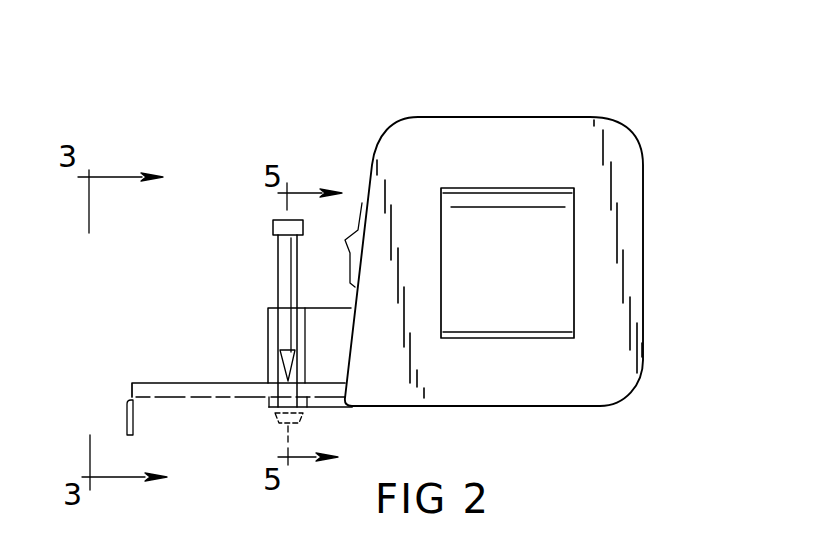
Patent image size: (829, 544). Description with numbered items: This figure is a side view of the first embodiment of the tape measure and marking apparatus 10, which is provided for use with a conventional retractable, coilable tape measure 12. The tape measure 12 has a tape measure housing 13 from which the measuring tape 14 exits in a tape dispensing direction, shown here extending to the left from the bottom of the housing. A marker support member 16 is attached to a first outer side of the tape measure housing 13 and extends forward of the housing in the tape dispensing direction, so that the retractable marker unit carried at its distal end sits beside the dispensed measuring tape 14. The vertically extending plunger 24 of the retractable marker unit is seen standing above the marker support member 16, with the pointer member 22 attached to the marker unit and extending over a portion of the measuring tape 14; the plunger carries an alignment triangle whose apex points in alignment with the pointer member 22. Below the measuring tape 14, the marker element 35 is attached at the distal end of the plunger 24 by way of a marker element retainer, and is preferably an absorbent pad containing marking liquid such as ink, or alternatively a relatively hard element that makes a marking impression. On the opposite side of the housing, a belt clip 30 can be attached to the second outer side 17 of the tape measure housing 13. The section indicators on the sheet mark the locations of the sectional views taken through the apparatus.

The tape measure and marking apparatus 10 is at (206, 277).
The tape measure 12 is at (648, 143).
The tape measure housing 13 is at (558, 117).
The measuring tape 14 is at (168, 383).
The marker support member 16 is at (322, 317).
The second outer side 17 is at (630, 272).
The pointer member 22 is at (282, 372).
The plunger 24 is at (278, 255).
The belt clip 30 is at (538, 295).
The marker element 35 is at (277, 424).